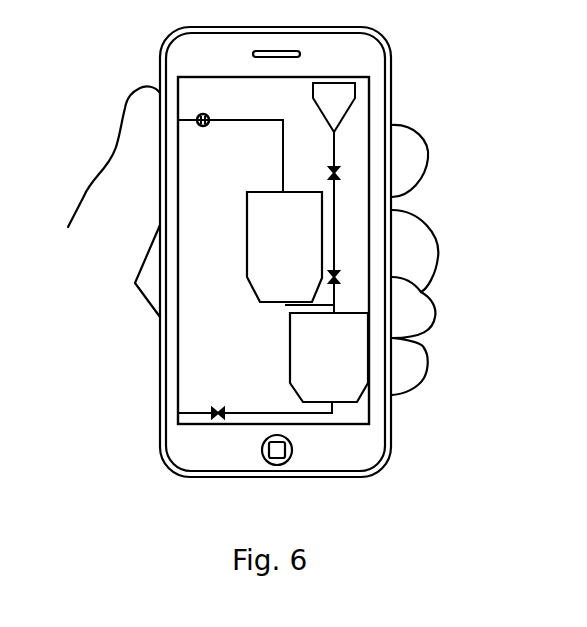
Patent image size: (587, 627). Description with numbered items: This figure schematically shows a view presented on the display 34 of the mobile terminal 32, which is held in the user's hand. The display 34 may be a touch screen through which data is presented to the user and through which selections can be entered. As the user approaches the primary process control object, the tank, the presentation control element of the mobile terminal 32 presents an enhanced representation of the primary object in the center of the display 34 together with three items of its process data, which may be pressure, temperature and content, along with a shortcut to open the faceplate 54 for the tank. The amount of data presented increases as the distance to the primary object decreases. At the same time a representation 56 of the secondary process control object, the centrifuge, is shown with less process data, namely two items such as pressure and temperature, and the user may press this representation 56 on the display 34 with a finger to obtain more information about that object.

The mobile terminal 32 is at (377, 53).
The display 34 is at (369, 158).
The faceplate 54 is at (247, 226).
The representation of the secondary object 56 is at (365, 387).